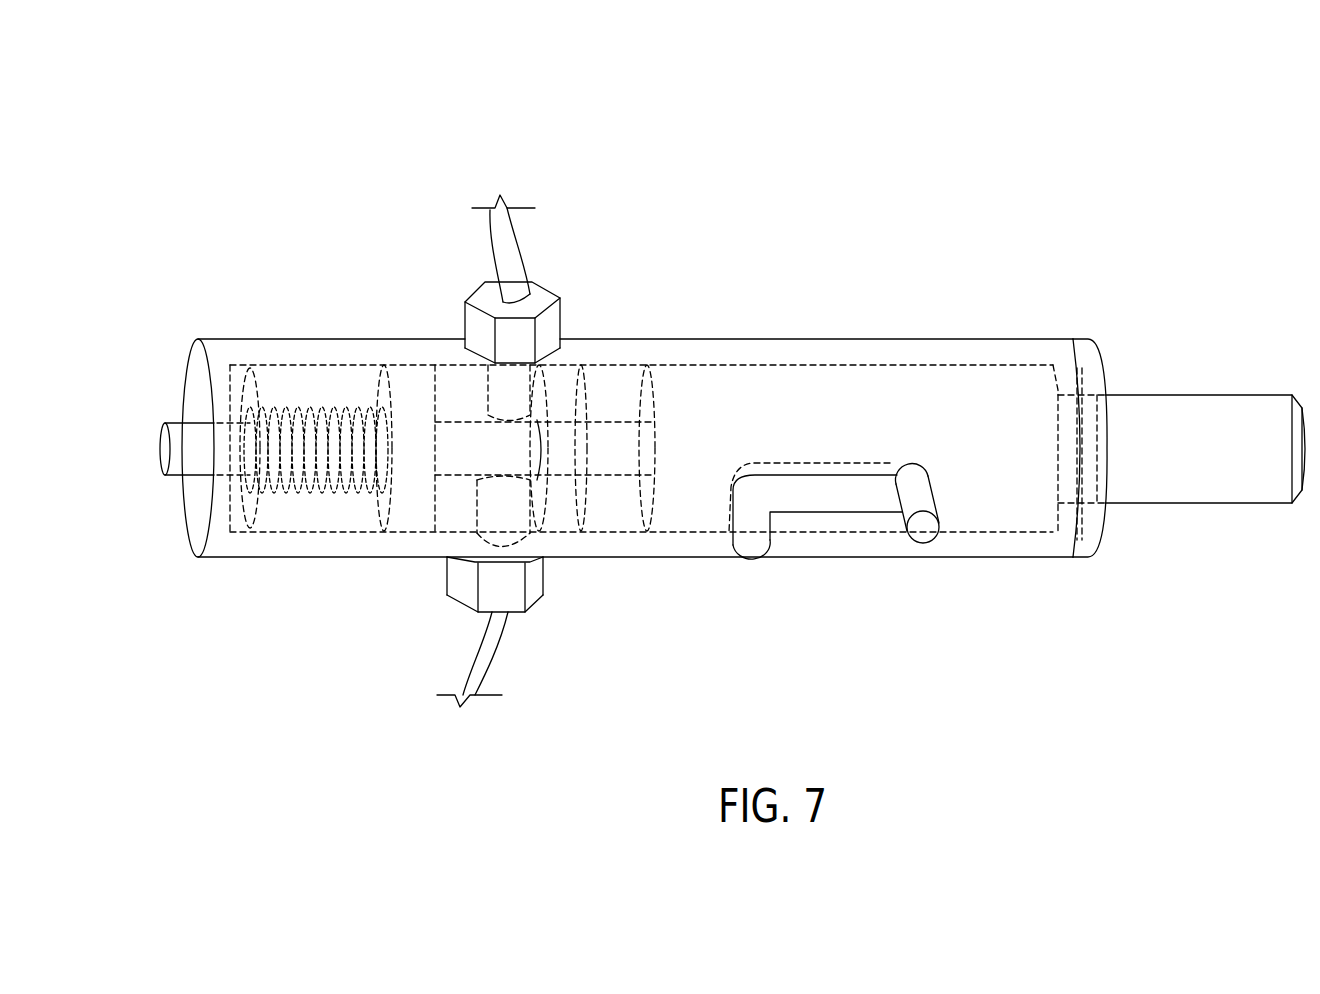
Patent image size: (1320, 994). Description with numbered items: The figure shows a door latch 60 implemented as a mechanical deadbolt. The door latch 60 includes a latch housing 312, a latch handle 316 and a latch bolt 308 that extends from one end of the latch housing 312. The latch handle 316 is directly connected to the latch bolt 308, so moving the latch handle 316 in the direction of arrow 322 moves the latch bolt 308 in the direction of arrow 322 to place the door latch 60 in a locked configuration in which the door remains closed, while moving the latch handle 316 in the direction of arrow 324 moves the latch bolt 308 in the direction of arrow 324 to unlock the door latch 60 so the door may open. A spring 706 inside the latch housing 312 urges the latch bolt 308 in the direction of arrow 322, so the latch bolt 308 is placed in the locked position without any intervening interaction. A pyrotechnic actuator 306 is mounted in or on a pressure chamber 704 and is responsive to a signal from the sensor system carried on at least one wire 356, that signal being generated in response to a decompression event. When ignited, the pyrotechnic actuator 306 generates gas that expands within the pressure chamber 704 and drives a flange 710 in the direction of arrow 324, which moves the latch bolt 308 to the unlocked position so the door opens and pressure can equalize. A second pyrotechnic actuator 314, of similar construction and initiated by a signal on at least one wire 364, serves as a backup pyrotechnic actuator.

The door latch 60 is at (866, 156).
The pyrotechnic actuator 306 is at (540, 303).
The latch bolt 308 is at (1225, 418).
The latch housing 312 is at (955, 355).
The pyrotechnic actuator 314 is at (528, 593).
The latch handle 316 is at (927, 520).
The arrow 322 is at (1194, 706).
The arrow 324 is at (1002, 746).
The wire 356 is at (513, 250).
The wire 364 is at (492, 648).
The pressure chamber 704 is at (453, 385).
The spring 706 is at (315, 468).
The flange 710 is at (407, 510).